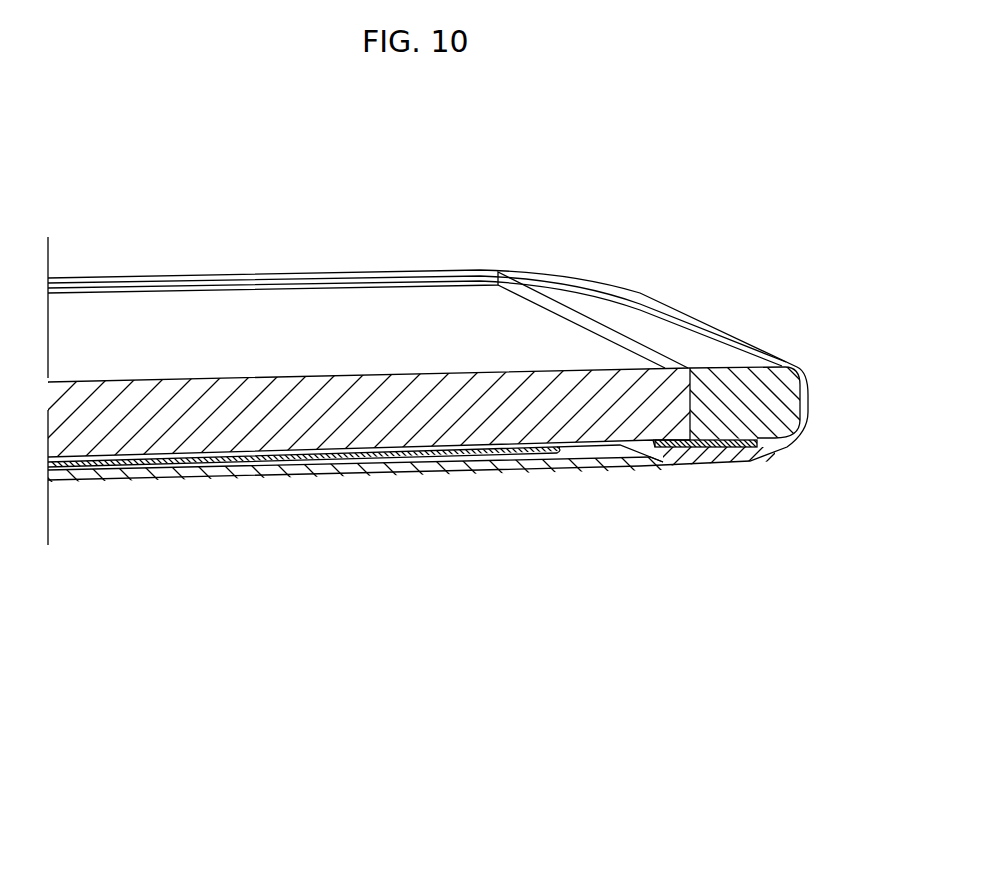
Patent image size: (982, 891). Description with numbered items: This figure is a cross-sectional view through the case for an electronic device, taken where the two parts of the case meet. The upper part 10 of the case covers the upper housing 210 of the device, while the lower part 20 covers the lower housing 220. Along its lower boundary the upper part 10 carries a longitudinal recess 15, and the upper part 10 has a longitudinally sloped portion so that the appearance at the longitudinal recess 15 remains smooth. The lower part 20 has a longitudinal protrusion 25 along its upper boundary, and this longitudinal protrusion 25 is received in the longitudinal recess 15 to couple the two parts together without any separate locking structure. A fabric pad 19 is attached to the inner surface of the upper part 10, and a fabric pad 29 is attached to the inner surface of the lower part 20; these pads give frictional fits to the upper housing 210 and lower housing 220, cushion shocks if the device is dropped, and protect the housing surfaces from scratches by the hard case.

The upper part 10 is at (152, 473).
The fabric pad 19 is at (248, 467).
The upper housing 210 is at (365, 420).
The longitudinal recess 15 is at (663, 447).
The longitudinal protrusion 25 is at (680, 453).
The fabric pad 29 is at (745, 443).
The lower housing 220 is at (697, 348).
The lower part 20 is at (800, 372).